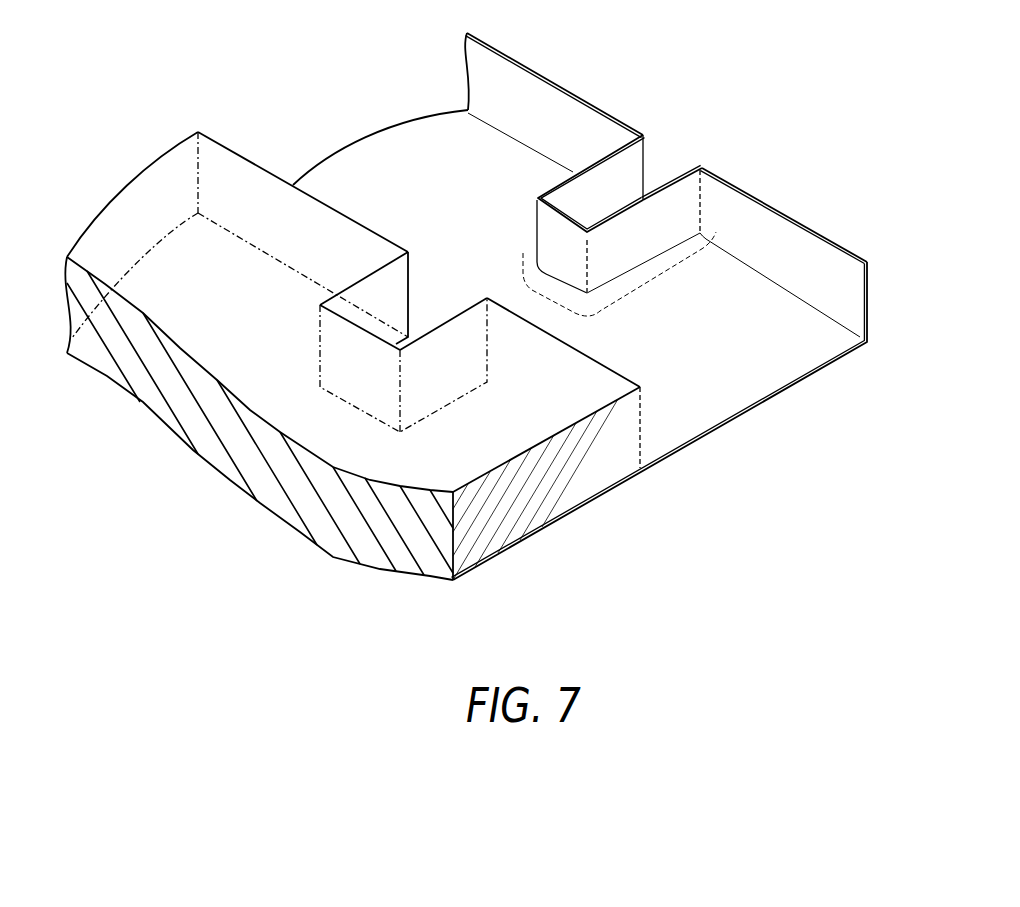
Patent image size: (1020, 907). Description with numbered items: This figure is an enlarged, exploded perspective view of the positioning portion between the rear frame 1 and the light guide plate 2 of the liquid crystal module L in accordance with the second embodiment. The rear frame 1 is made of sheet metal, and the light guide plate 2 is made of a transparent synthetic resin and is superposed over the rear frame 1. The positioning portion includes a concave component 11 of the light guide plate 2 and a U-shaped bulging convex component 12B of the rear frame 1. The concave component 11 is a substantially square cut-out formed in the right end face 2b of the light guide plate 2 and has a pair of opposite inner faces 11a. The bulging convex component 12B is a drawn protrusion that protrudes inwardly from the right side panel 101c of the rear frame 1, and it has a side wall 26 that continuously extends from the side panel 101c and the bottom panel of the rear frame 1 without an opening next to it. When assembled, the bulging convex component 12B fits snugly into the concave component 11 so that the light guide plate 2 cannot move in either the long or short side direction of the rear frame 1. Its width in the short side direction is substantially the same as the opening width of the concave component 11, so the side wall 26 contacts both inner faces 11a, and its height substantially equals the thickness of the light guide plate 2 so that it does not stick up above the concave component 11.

The rear frame 1 is at (757, 380).
The light guide plate 2 is at (527, 425).
The concave component 11 is at (463, 308).
The inner face 11a is at (427, 328).
The end face 2b is at (636, 367).
The bulging convex component 12B is at (552, 190).
The side wall 26 is at (643, 232).
The side panel 101c is at (770, 203).
The liquid crystal module L is at (740, 128).